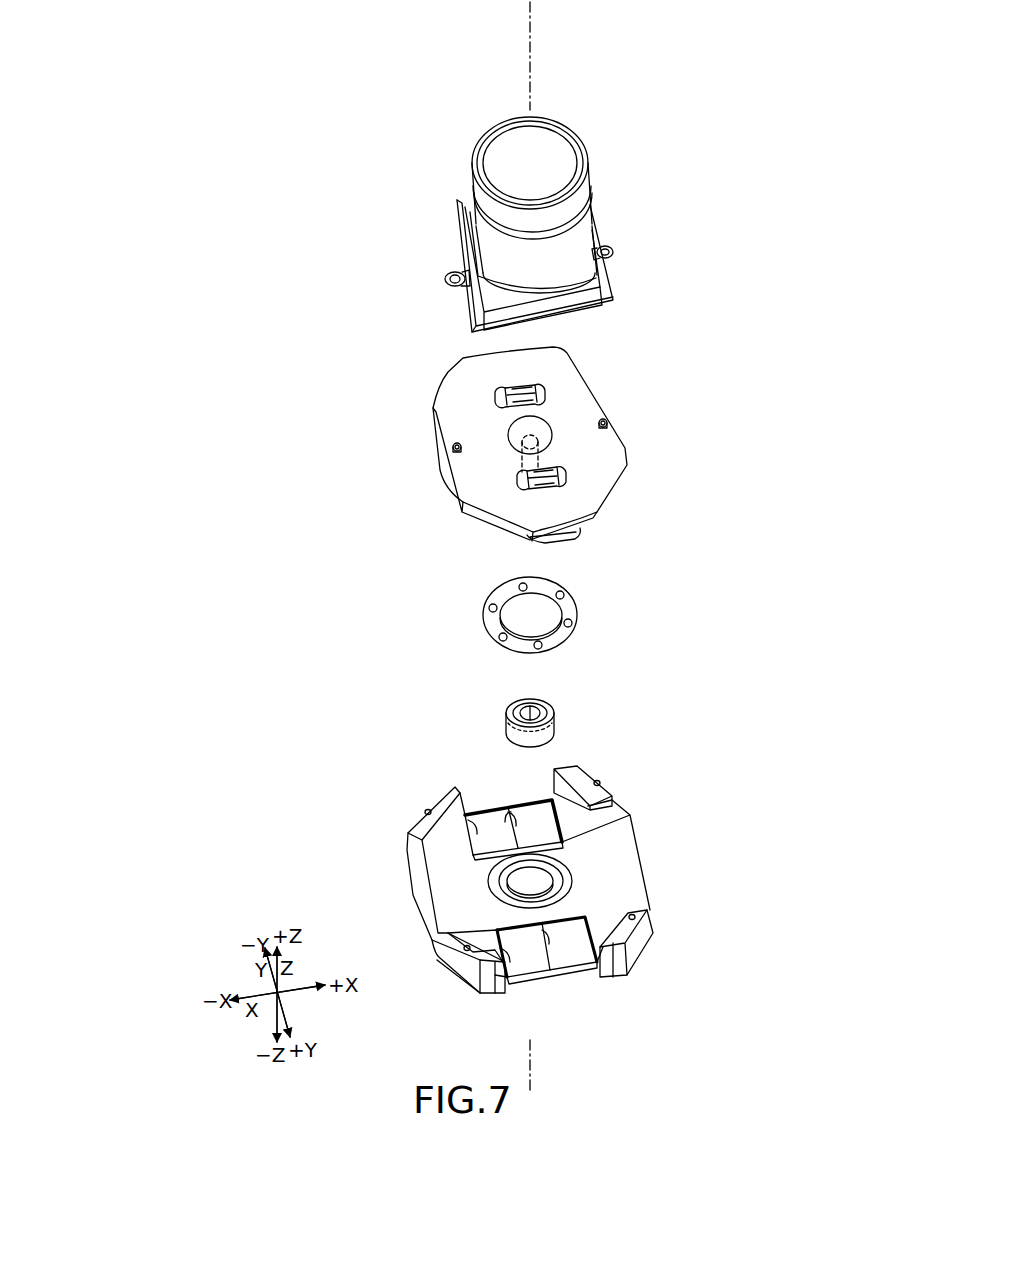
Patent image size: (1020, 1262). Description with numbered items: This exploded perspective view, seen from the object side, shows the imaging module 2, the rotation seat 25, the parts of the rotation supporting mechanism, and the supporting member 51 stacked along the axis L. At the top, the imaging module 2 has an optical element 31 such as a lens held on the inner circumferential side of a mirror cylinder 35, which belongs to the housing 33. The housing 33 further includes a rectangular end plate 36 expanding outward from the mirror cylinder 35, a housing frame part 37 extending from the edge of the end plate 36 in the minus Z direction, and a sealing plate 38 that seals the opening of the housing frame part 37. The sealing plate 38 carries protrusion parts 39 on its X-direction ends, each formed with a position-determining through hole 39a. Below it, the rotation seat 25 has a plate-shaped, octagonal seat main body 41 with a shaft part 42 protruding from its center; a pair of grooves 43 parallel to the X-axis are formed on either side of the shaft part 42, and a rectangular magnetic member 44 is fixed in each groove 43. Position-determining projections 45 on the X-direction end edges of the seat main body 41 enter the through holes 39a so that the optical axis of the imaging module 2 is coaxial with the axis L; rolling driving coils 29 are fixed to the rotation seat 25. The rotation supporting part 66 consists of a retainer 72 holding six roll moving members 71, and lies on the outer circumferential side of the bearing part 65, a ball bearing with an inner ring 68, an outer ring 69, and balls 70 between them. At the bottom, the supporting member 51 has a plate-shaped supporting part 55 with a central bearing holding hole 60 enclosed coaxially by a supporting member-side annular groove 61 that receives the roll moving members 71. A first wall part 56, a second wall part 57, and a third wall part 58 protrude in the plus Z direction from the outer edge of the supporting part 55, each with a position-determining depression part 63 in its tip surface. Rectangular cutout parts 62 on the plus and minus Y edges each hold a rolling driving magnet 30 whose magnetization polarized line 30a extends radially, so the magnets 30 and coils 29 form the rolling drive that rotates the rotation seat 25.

The axis L is at (530, 40).
The imaging module 2 is at (455, 133).
The optical element 31 is at (548, 153).
The housing 33 is at (690, 182).
The mirror cylinder 35 is at (577, 238).
The end plate 36 is at (605, 280).
The housing frame part 37 is at (603, 293).
The sealing plate 38 is at (608, 304).
The protrusion part 39 is at (445, 282).
The position-determining through hole 39a is at (450, 274).
The rotation seat 25 is at (410, 405).
The seat main body 41 is at (580, 378).
The shaft part 42 is at (545, 452).
The groove 43 is at (520, 385).
The magnetic member 44 is at (520, 472).
The position-determining projection 45 is at (453, 445).
The rolling driving coil 29 is at (570, 534).
The rotation supporting part 66 is at (458, 604).
The roll moving member 71 is at (572, 620).
The retainer 72 is at (490, 622).
The bearing part 65 is at (577, 716).
The inner ring 68 is at (535, 705).
The outer ring 69 is at (508, 730).
The balls 70 is at (520, 707).
The supporting member 51 is at (352, 804).
The supporting part 55 is at (607, 858).
The first wall part 56 is at (412, 888).
The second wall part 57 is at (633, 960).
The third wall part 58 is at (602, 783).
The bearing holding hole 60 is at (540, 876).
The supporting member-side annular groove 61 is at (568, 893).
The cutout part 62 is at (477, 812).
The position-determining depression part 63 is at (426, 810).
The rolling driving magnet 30 is at (535, 810).
The magnetization polarized line 30a is at (512, 815).